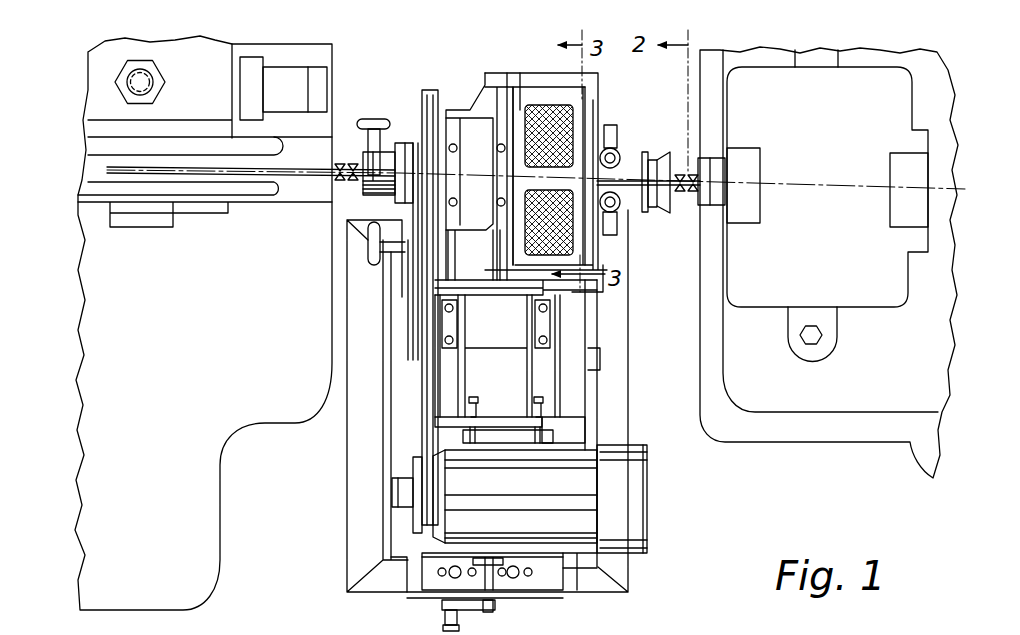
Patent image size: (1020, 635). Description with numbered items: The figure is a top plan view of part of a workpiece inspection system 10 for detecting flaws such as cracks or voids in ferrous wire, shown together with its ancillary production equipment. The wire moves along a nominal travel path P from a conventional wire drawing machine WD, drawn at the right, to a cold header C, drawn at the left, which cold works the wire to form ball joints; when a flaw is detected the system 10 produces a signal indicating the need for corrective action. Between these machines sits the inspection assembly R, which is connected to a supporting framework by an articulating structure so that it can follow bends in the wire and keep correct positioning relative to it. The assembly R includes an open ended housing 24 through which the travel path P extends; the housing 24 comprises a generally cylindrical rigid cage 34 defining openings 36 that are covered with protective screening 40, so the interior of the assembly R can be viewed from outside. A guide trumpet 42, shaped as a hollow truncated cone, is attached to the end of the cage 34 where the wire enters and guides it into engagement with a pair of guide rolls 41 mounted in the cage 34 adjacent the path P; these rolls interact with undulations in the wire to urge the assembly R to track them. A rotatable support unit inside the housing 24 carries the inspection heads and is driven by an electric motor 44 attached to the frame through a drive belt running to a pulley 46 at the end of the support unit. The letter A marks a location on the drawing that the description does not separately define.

The system 10 is at (512, 54).
The housing 24 is at (570, 73).
The cage 34 is at (523, 98).
The openings 36 is at (575, 118).
The protective screening 40 is at (540, 256).
The guide rolls 41 is at (614, 208).
The guide trumpet 42 is at (651, 215).
The electric motor 44 is at (590, 455).
The pulley 46 is at (427, 88).
The point A is at (522, 176).
The cold header C is at (291, 44).
The nominal travel path P is at (626, 176).
The inspection assembly R is at (527, 60).
The wire drawing machine WD is at (773, 90).